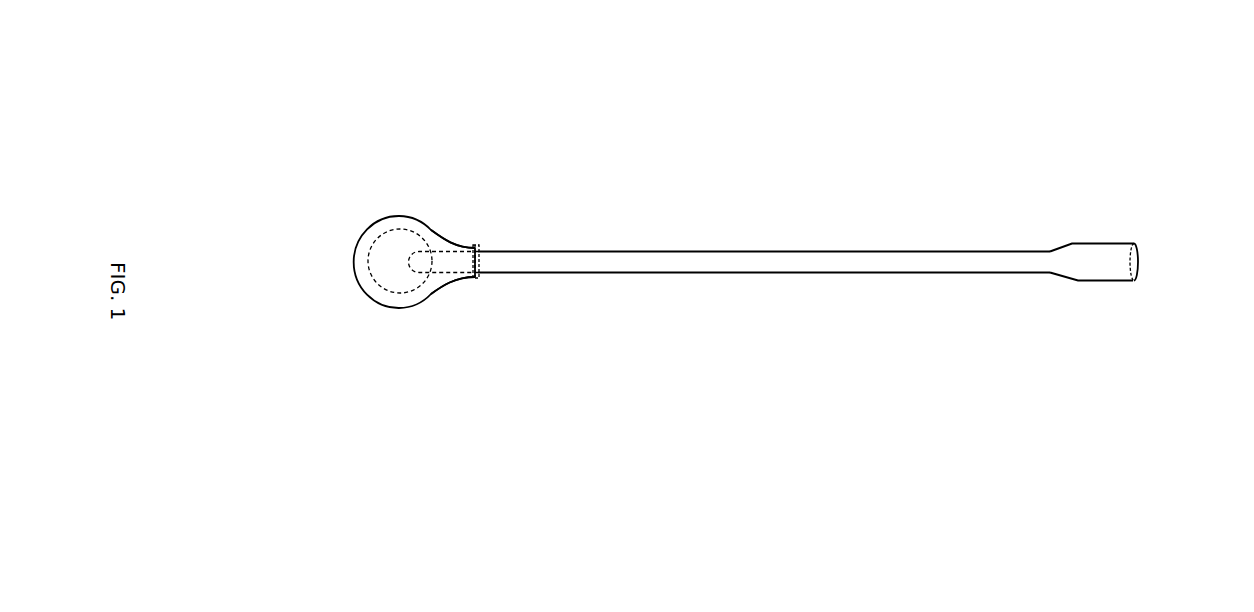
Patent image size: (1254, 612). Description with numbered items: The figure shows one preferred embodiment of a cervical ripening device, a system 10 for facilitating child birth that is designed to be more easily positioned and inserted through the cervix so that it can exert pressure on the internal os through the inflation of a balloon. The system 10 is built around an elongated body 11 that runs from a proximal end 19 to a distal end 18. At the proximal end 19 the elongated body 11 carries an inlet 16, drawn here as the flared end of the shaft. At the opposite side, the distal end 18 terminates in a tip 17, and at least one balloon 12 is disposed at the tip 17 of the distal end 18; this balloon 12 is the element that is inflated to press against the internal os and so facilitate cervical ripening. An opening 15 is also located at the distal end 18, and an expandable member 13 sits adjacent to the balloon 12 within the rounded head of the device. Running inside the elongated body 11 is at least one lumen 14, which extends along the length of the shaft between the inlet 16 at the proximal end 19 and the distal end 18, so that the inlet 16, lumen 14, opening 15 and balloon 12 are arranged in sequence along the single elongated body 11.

The system 10 is at (778, 165).
The elongated body 11 is at (887, 238).
The balloon 12 is at (397, 237).
The expandable member 13 is at (367, 237).
The lumen 14 is at (832, 272).
The opening 15 is at (410, 265).
The inlet 16 is at (1140, 248).
The tip 17 is at (421, 250).
The distal end 18 is at (353, 177).
The proximal end 19 is at (1086, 213).